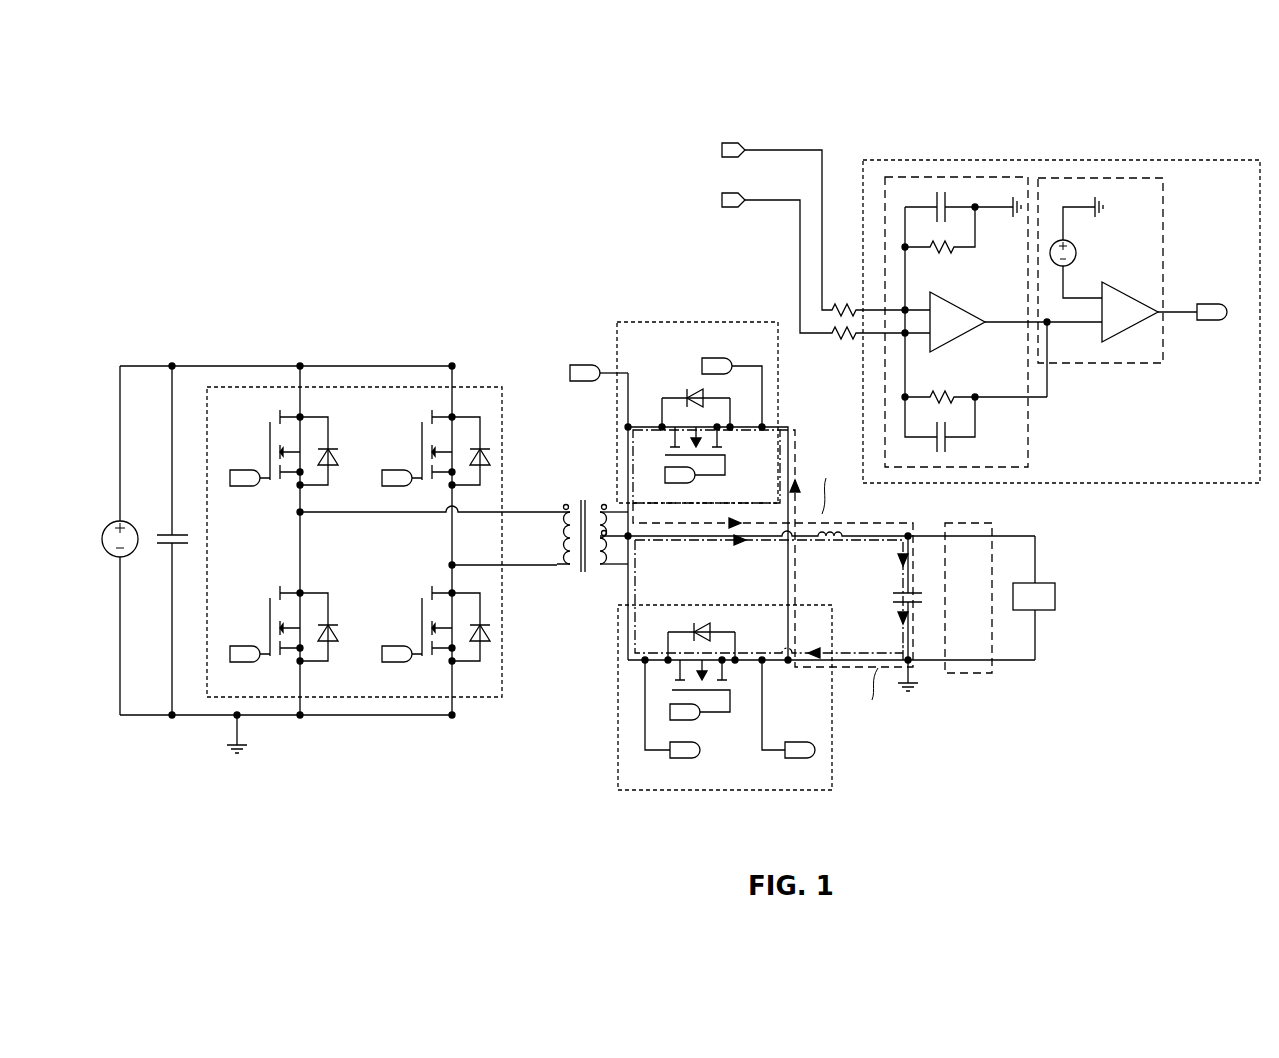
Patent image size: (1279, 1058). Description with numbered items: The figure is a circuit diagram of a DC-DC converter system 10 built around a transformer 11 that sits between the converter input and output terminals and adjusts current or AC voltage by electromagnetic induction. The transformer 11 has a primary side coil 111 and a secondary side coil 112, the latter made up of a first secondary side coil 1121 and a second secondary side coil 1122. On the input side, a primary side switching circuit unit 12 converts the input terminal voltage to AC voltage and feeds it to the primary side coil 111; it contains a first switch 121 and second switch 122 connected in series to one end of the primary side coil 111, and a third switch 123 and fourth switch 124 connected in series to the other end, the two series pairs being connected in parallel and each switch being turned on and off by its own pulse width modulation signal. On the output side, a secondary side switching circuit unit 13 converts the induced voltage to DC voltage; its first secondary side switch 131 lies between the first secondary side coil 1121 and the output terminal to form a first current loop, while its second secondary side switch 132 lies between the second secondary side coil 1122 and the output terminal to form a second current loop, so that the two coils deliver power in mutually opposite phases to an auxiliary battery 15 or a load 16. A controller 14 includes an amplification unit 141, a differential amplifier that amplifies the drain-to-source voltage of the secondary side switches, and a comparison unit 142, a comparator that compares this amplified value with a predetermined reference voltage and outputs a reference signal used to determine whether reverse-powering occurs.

The DC-DC converter system 10 is at (463, 246).
The transformer 11 is at (579, 509).
The primary side coil 111 is at (566, 568).
The secondary side coil 112 is at (585, 644).
The first secondary side coil 1121 is at (598, 507).
The second secondary side coil 1122 is at (598, 568).
The primary side switching circuit unit 12 is at (277, 387).
The first switch 121 is at (312, 412).
The second switch 122 is at (318, 664).
The third switch 123 is at (464, 412).
The fourth switch 124 is at (462, 664).
The secondary side switching circuit unit 13 is at (662, 322).
The first secondary side switch 131 is at (722, 390).
The second secondary side switch 132 is at (722, 630).
The controller 14 is at (1163, 484).
The amplification unit 141 is at (907, 177).
The comparison unit 142 is at (1164, 214).
The auxiliary battery 15 is at (968, 674).
The load 16 is at (1056, 597).